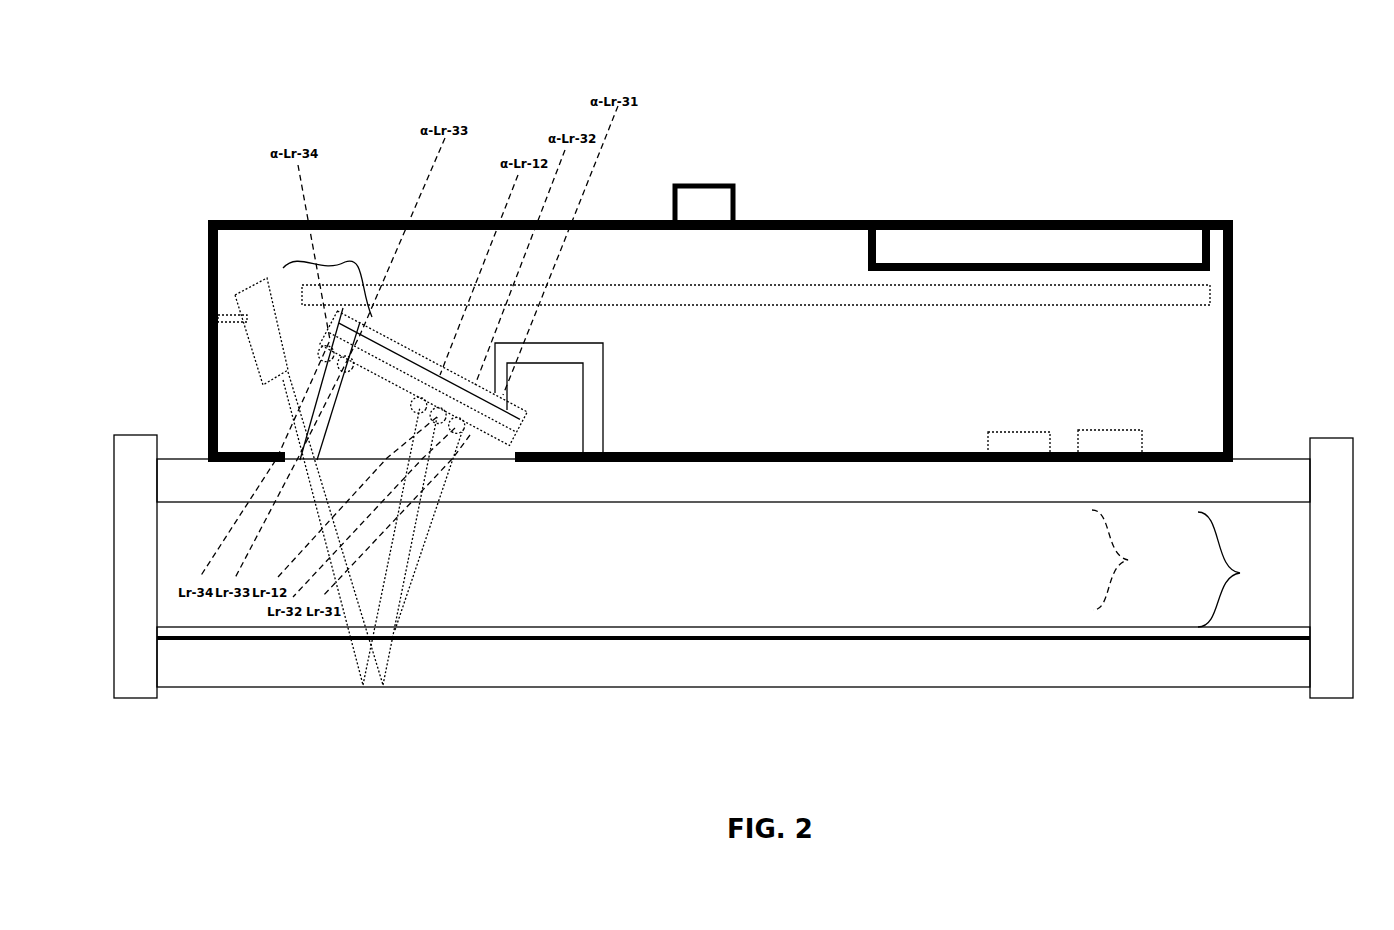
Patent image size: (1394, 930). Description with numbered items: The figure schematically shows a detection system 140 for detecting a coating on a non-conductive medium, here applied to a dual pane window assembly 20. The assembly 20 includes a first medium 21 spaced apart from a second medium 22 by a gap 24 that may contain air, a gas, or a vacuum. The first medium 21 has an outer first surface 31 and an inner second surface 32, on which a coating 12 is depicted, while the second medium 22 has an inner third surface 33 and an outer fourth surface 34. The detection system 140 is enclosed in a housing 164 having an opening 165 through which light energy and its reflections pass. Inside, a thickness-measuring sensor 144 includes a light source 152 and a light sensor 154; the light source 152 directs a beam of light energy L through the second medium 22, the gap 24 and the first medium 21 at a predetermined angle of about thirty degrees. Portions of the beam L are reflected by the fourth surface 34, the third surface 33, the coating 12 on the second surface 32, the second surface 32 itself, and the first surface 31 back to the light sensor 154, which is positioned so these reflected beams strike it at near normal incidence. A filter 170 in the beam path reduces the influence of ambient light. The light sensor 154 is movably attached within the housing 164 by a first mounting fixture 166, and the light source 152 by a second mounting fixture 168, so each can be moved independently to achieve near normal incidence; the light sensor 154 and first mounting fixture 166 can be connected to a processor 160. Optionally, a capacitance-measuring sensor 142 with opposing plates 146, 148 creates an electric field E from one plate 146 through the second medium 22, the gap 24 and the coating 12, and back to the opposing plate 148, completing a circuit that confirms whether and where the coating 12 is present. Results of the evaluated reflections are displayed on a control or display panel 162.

The detection system 140 is at (375, 160).
The housing 164 is at (593, 216).
The control or display panel 162 is at (1210, 247).
The processor 160 is at (1213, 290).
The light source 152 is at (250, 283).
The second mounting fixture 168 is at (230, 316).
The light beam L is at (252, 360).
The thickness-measuring sensor 144 is at (405, 464).
The first mounting fixture 166 is at (602, 343).
The light sensor 154 is at (520, 405).
The filter 170 is at (520, 442).
The opening 165 is at (517, 462).
The capacitance-measuring sensor 142 is at (1075, 386).
The plate 146 is at (1028, 430).
The opposing plate 148 is at (1120, 416).
The assembly 20 is at (733, 590).
The second medium 22 is at (862, 485).
The first medium 21 is at (835, 672).
The coating 12 is at (638, 625).
The fourth surface 34 is at (1282, 453).
The third surface 33 is at (1272, 502).
The gap 24 is at (1234, 569).
The electric field E is at (1121, 560).
The second surface 32 is at (1235, 643).
The first surface 31 is at (1265, 687).